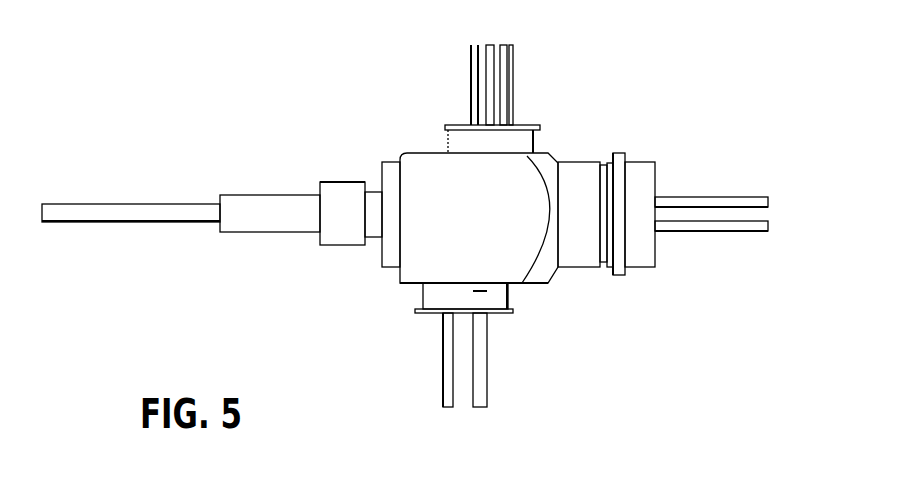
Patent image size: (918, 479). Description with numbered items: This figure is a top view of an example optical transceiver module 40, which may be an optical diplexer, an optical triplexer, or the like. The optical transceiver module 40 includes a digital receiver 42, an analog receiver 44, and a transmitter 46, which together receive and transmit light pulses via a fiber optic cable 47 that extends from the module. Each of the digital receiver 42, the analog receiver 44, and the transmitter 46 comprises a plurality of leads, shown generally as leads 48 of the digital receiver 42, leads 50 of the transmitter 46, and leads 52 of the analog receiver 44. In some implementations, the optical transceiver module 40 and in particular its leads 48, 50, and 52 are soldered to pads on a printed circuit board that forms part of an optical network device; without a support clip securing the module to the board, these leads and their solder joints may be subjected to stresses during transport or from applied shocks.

The optical transceiver module 40 is at (653, 93).
The digital receiver 42 is at (464, 146).
The analog receiver 44 is at (487, 291).
The transmitter 46 is at (638, 173).
The fiber optic cable 47 is at (118, 205).
The leads 48 is at (523, 83).
The leads 50 is at (735, 182).
The leads 52 is at (493, 385).